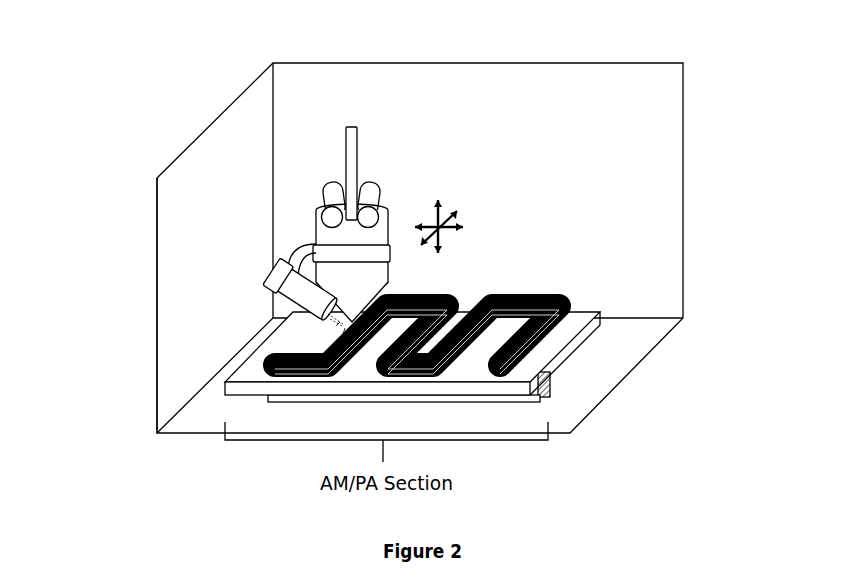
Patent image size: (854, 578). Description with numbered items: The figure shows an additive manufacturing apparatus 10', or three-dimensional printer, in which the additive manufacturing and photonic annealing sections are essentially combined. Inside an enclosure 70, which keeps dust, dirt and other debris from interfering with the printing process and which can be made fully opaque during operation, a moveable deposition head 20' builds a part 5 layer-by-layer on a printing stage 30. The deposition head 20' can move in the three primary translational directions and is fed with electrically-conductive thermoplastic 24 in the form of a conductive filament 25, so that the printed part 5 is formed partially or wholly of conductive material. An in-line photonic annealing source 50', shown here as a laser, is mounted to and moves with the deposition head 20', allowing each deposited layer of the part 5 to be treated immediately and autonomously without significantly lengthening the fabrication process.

The additive manufacturing apparatus 10' is at (70, 84).
The enclosure 70 is at (682, 51).
The printing stage 30 is at (331, 391).
The part 5 is at (558, 292).
The deposition head 20' is at (401, 214).
The conductive filament 25 is at (395, 156).
The electrically-conductive thermoplastic 24 is at (362, 146).
The in-line photonic annealing source 50' is at (278, 261).